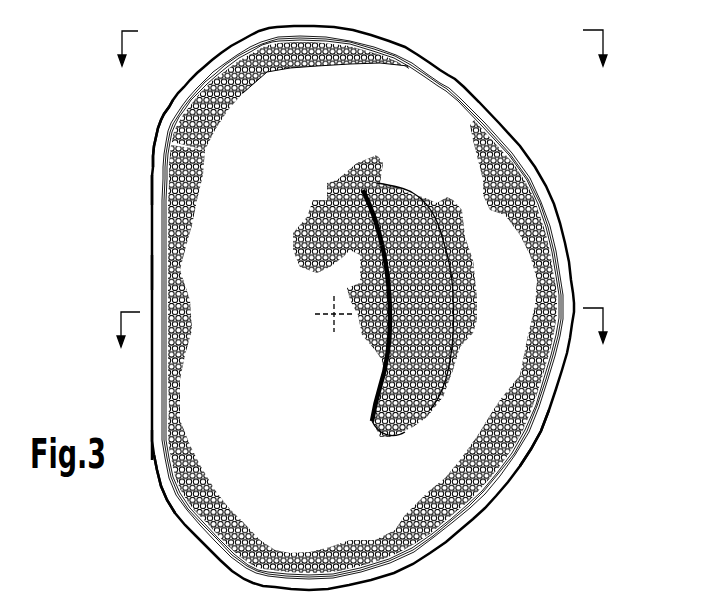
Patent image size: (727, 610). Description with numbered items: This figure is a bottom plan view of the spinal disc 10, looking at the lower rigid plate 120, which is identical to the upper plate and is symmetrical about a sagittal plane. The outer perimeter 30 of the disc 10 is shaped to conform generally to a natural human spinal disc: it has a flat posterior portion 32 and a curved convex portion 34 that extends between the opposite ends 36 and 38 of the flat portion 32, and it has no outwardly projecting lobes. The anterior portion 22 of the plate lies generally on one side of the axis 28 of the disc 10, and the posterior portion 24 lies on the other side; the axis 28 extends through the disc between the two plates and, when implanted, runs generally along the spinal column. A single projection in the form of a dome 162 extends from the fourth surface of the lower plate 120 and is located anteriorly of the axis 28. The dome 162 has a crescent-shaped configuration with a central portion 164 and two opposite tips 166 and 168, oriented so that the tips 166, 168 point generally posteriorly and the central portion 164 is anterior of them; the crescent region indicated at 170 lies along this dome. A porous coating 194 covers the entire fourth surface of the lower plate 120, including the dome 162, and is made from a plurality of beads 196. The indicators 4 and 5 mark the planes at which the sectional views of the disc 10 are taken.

The section line 4- 4 is at (362, 60).
The section line 5- 5 is at (362, 340).
The disc 10 is at (536, 118).
The anterior portion 22 is at (555, 470).
The posterior portion 24 is at (140, 485).
The axis 28 is at (328, 322).
The outer perimeter 30 is at (148, 142).
The flat posterior portion 32 is at (152, 272).
The curved convex portion 34 is at (446, 65).
The end of flat portion 36 is at (152, 184).
The end of flat portion 38 is at (153, 445).
The lower rigid plate 120 is at (495, 207).
The dome 162 is at (370, 380).
The central portion 164 is at (445, 320).
The tip 166 is at (362, 190).
The tip 168 is at (370, 430).
The central porous region 170 is at (450, 373).
The porous coating 194 is at (300, 70).
The beads 196 is at (256, 72).